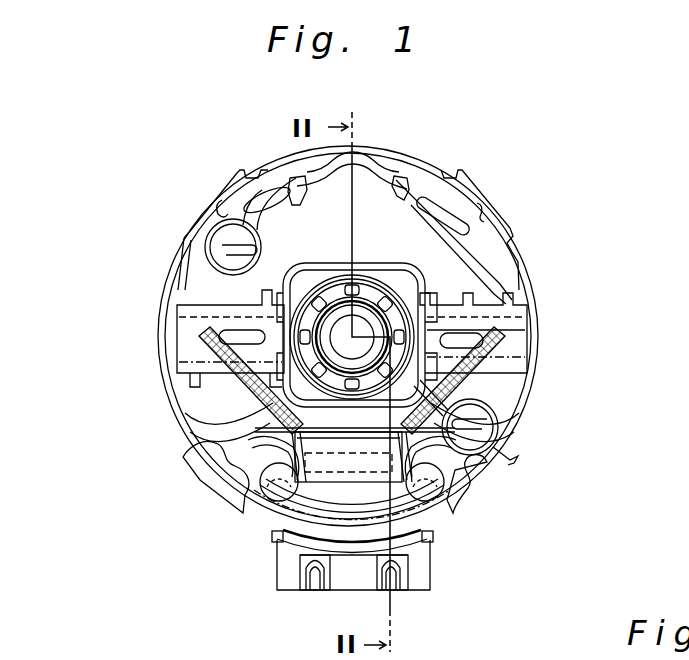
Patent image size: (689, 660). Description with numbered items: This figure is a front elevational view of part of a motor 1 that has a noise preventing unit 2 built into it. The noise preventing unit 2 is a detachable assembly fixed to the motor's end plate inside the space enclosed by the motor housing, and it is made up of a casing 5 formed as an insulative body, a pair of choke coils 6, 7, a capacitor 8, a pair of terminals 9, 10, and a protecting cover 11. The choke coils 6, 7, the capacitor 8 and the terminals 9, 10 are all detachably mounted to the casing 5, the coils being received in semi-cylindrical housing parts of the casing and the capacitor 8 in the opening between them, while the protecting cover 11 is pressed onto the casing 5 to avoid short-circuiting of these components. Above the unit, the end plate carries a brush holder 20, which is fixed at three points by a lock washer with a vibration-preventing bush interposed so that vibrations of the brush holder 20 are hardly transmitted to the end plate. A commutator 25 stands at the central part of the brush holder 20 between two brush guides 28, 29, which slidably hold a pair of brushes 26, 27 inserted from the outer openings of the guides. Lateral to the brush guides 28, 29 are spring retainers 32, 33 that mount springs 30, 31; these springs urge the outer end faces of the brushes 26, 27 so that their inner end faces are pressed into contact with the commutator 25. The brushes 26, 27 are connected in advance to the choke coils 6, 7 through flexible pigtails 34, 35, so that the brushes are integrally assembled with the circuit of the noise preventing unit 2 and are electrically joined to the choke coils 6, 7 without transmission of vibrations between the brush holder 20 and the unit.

The motor 1 is at (540, 257).
The noise preventing unit 2 is at (257, 543).
The casing 5 is at (274, 560).
The choke coil 6 is at (310, 413).
The choke coil 7 is at (352, 443).
The capacitor 8 is at (420, 540).
The terminal 9 is at (316, 582).
The terminal 10 is at (392, 580).
The protecting cover 11 is at (200, 438).
The brush holder 20 is at (378, 195).
The commutator 25 is at (426, 262).
The brush 26 is at (520, 322).
The brush 27 is at (190, 320).
The brush guide 28 is at (507, 298).
The brush guide 29 is at (177, 272).
The spring 30 is at (498, 425).
The spring 31 is at (284, 205).
The spring retainer 32 is at (518, 462).
The spring retainer 33 is at (230, 245).
The pigtail 34 is at (486, 368).
The pigtail 35 is at (215, 400).